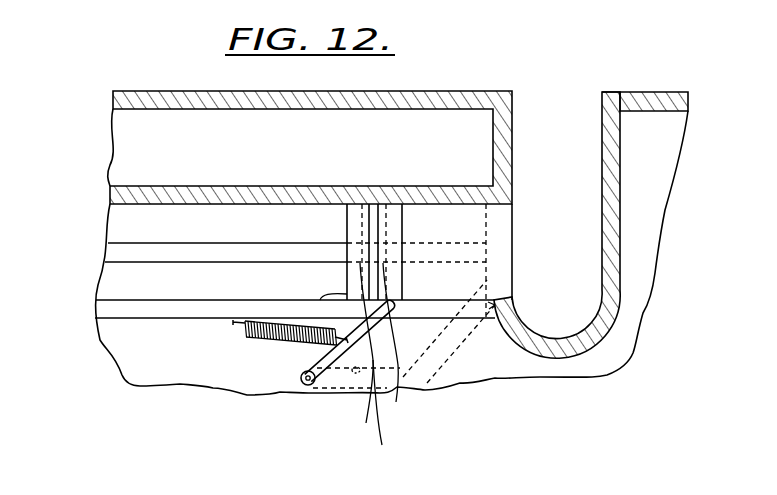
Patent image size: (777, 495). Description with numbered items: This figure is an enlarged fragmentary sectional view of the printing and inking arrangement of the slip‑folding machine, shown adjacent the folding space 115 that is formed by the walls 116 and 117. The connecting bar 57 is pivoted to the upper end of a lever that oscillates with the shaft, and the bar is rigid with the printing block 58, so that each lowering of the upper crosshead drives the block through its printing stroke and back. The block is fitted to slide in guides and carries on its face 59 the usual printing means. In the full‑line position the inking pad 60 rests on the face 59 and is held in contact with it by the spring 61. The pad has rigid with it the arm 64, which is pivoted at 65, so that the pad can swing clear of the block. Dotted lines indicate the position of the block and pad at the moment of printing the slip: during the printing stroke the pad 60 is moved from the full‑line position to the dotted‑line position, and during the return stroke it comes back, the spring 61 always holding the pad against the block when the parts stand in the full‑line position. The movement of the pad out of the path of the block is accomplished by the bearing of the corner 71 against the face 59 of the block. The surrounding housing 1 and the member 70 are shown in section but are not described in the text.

The housing 1 is at (668, 210).
The connecting bar 57 is at (140, 262).
The printing block 58 is at (347, 222).
The face 59 is at (378, 240).
The inking pad 60 is at (393, 345).
The spring 61 is at (297, 338).
The arm 64 is at (348, 342).
The pivot 65 is at (306, 384).
The link 70 is at (367, 355).
The corner 71 is at (374, 416).
The folding space 115 is at (557, 118).
The wall 116 is at (602, 178).
The wall 117 is at (512, 163).